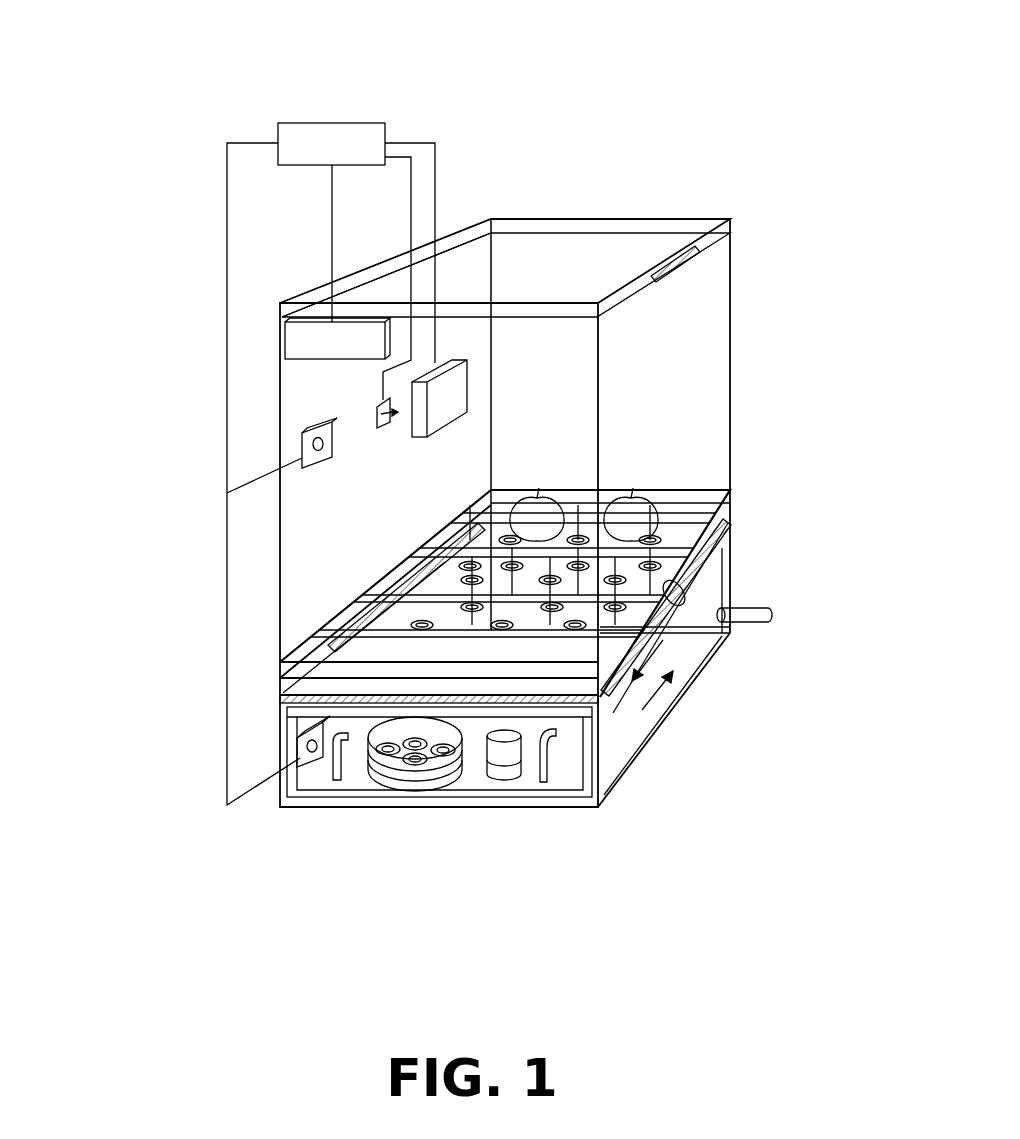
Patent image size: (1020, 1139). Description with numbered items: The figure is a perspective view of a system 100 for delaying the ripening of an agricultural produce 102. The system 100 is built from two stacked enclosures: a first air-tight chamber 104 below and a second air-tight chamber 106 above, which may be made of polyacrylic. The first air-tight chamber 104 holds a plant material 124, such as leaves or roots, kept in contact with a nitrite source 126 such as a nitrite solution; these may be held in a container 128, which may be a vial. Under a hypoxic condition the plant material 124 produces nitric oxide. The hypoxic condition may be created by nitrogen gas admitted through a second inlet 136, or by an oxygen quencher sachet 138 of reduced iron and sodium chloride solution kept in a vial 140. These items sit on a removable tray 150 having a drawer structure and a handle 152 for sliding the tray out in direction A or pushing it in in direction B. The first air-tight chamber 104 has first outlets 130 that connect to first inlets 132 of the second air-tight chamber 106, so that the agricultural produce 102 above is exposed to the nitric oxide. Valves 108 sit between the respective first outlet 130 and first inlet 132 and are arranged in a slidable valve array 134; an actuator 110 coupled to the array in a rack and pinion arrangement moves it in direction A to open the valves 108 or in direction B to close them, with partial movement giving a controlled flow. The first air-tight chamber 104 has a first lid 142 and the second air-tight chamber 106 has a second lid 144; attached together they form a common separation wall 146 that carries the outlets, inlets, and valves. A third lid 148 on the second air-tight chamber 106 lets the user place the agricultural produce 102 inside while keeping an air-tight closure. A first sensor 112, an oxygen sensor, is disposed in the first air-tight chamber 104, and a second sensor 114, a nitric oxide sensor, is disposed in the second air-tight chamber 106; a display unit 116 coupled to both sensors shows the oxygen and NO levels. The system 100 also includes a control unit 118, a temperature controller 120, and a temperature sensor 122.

The system 100 is at (762, 84).
The agricultural produce 102 is at (650, 491).
The first air-tight chamber 104 is at (711, 689).
The second air-tight chamber 106 is at (756, 321).
The valves 108 is at (722, 530).
The actuator 110 is at (710, 580).
The first sensor 112 is at (280, 797).
The second sensor 114 is at (302, 445).
The display unit 116 is at (283, 337).
The control unit 118 is at (366, 123).
The temperature controller 120 is at (458, 400).
The temperature sensor 122 is at (377, 411).
The plant material 124 is at (419, 777).
The nitrite source 126 is at (397, 777).
The container 128 is at (352, 786).
The first outlet 130 is at (333, 752).
The first inlet 132 is at (380, 578).
The valve array 134 is at (607, 698).
The second inlet 136 is at (758, 605).
The oxygen quencher sachet 138 is at (508, 780).
The vial 140 is at (474, 780).
The first lid 142 is at (575, 725).
The second lid 144 is at (320, 627).
The common separation wall 146 is at (282, 688).
The third lid 148 is at (640, 215).
The removable tray 150 is at (707, 665).
The handle 152 is at (543, 785).